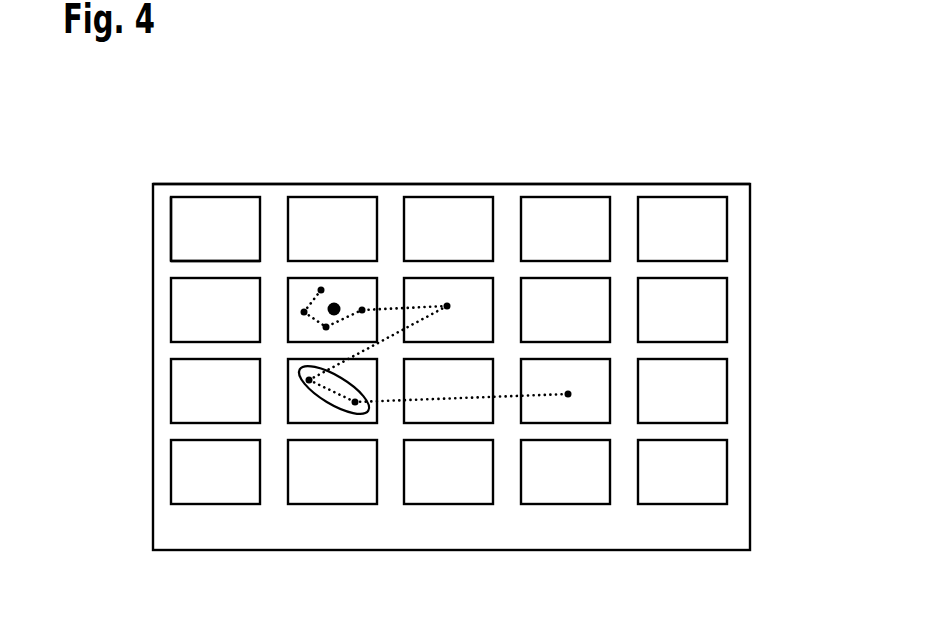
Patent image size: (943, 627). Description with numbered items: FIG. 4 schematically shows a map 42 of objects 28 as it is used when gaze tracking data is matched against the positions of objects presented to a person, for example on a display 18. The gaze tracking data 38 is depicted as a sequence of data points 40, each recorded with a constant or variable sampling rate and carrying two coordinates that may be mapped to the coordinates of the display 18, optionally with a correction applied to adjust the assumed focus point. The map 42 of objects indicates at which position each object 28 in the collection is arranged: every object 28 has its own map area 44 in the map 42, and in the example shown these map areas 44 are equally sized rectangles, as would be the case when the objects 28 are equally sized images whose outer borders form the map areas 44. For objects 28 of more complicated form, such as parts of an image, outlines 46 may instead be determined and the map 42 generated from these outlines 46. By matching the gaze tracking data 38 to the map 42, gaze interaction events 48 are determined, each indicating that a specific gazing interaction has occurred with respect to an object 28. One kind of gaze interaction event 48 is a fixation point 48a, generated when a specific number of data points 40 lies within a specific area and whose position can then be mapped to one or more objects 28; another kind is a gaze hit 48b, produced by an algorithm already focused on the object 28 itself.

The display 18 is at (273, 212).
The object 28 is at (195, 212).
The gaze tracking data 38 is at (395, 307).
The data point 40 is at (302, 313).
The map of objects 42 is at (700, 172).
The map area 44 is at (188, 236).
The outline 46 is at (172, 213).
The gaze interaction event 48 is at (215, 271).
The fixation point 48a is at (334, 305).
The gaze hit 48b is at (306, 392).